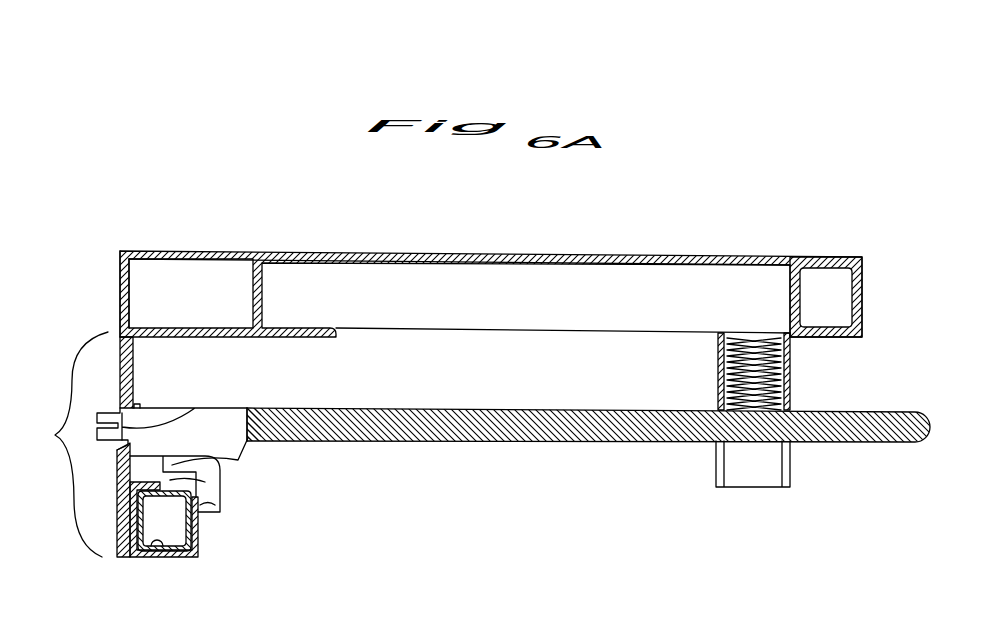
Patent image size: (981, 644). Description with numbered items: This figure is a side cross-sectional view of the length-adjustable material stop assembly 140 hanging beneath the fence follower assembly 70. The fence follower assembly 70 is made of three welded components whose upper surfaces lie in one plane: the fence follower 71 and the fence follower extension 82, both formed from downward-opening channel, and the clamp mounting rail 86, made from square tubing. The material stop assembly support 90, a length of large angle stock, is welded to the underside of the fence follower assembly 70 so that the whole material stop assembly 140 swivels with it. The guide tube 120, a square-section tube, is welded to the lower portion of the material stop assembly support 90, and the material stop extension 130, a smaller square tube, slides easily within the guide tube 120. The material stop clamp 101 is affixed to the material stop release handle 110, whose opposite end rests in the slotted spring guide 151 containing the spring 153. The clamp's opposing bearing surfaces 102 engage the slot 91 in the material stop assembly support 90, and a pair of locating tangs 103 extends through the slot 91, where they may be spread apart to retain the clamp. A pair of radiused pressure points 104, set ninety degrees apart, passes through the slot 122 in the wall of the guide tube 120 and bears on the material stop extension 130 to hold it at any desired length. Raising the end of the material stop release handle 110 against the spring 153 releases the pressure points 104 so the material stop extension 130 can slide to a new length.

The fence follower assembly 70 is at (642, 250).
The fence follower 71 is at (111, 253).
The fence follower extension 82 is at (548, 262).
The clamp mounting rail 86 is at (865, 284).
The material stop assembly support 90 is at (133, 372).
The slot 91 is at (188, 408).
The material stop clamp 101 is at (252, 408).
The opposing bearing surfaces 102 is at (137, 407).
The locating tangs 103 is at (97, 421).
The radiused pressure points 104 is at (178, 483).
The material stop release handle 110 is at (470, 443).
The guide tube 120 is at (198, 540).
The slot 122 is at (175, 480).
The material stop extension 130 is at (157, 548).
The length-adjustable material stop assembly 140 is at (46, 446).
The slotted spring guide 151 is at (718, 372).
The spring 153 is at (780, 396).